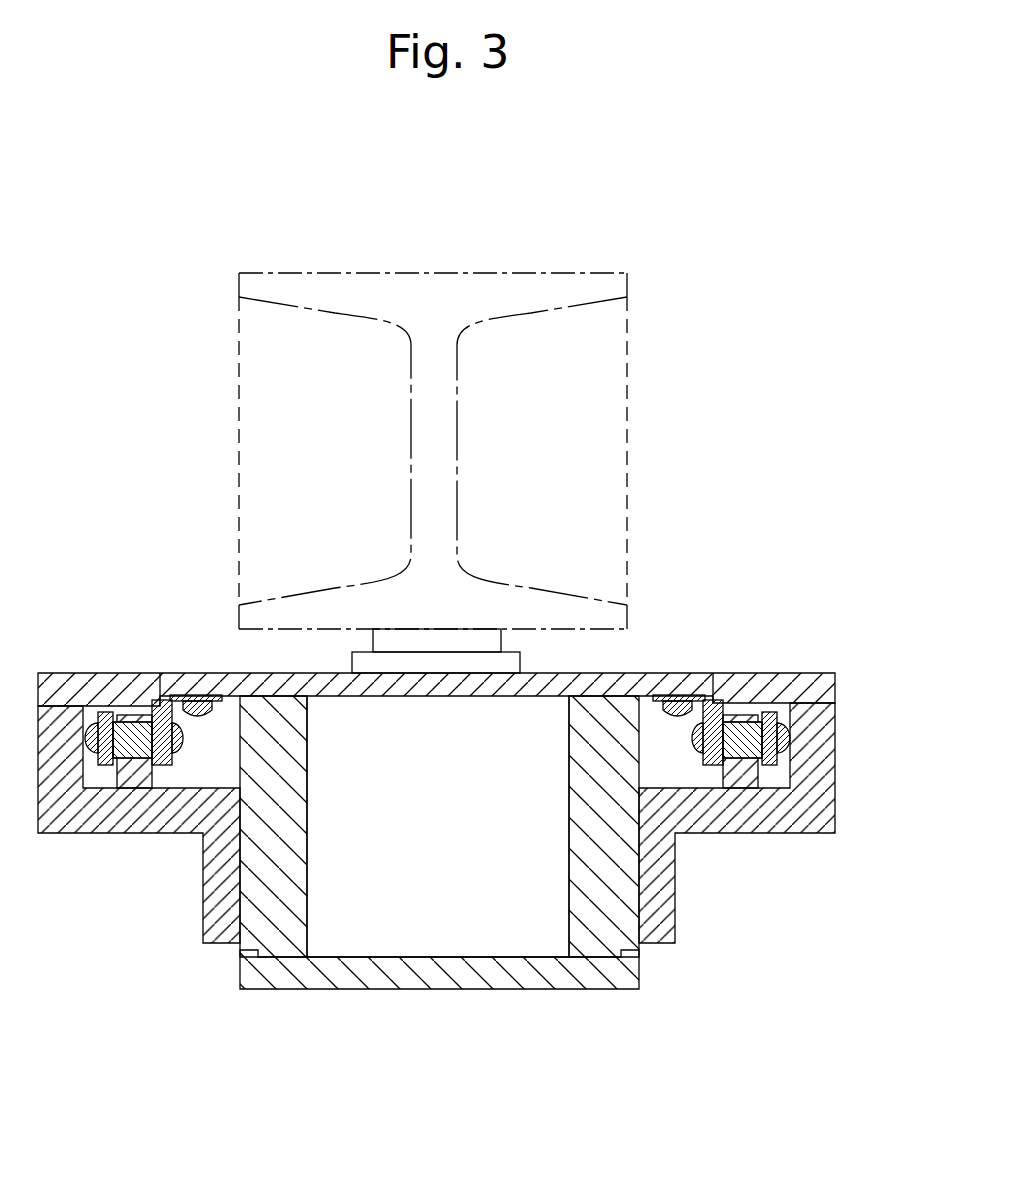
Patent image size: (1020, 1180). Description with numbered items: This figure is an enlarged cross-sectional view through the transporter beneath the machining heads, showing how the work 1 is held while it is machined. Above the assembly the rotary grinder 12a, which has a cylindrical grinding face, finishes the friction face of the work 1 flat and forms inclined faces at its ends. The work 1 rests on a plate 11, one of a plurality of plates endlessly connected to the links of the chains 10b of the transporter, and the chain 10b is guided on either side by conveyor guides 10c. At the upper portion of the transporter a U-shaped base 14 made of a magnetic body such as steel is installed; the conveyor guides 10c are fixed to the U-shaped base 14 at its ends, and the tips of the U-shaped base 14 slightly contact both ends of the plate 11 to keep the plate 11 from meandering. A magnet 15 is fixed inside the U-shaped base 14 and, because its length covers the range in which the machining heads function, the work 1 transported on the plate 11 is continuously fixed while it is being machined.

The work 1 is at (432, 638).
The rotary grinder 12a is at (626, 362).
The chain 10b is at (132, 725).
The conveyor guide 10c is at (70, 818).
The plate 11 is at (663, 684).
The U-shaped base 14 is at (412, 978).
The magnet 15 is at (482, 937).